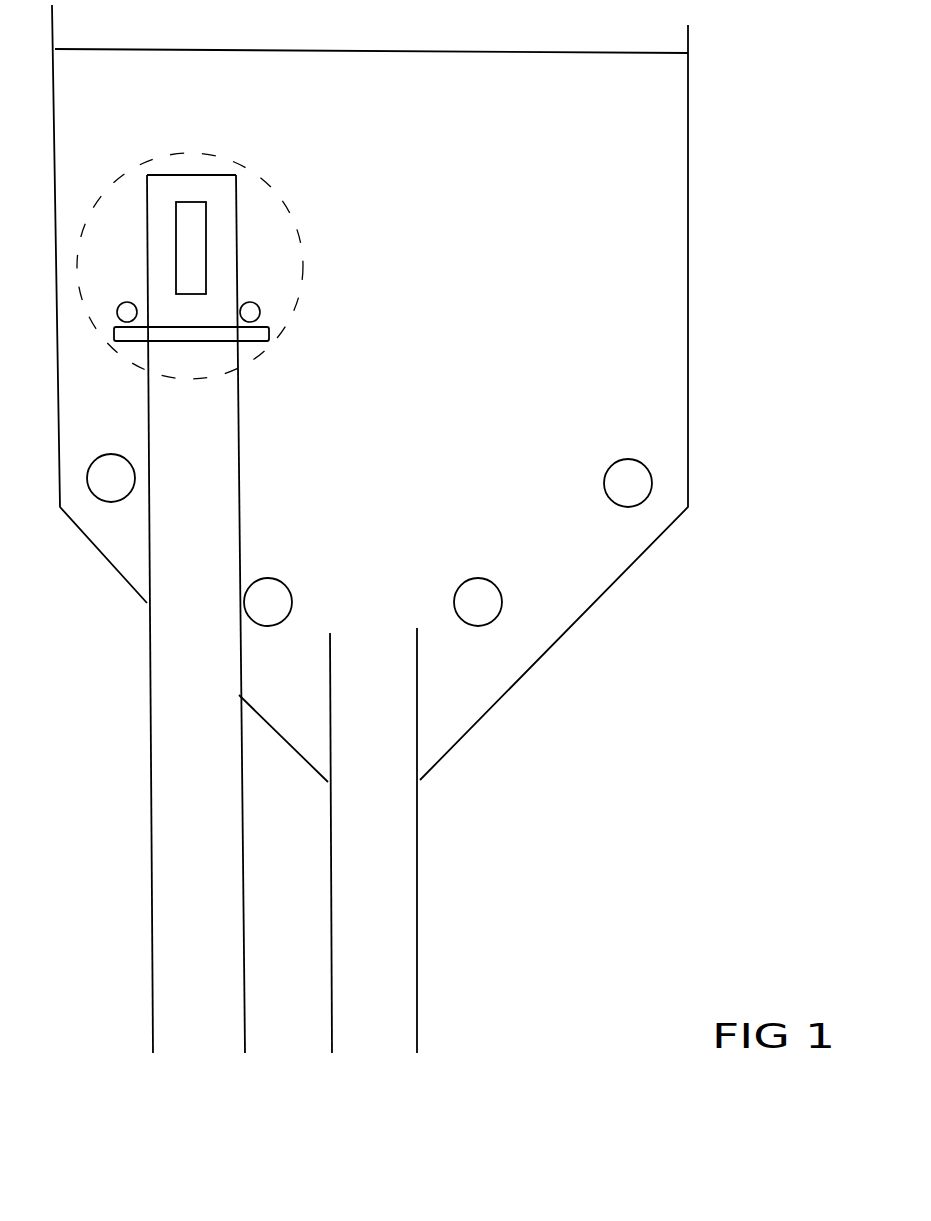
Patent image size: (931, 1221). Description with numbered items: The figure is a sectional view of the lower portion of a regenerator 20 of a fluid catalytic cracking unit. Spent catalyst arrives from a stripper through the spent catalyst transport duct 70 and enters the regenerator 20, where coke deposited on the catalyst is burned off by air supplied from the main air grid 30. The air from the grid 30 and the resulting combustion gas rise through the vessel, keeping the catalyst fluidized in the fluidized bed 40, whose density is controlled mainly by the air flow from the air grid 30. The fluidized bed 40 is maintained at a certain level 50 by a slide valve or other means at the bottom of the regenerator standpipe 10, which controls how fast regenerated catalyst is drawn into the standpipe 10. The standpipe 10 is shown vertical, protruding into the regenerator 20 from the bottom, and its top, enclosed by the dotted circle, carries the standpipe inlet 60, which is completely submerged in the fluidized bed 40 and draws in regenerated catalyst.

The regenerator standpipe 10 is at (212, 832).
The regenerator 20 is at (688, 298).
The main air grid 30 is at (646, 467).
The fluidized bed 40 is at (405, 265).
The level 50 is at (482, 53).
The standpipe inlet 60 is at (290, 276).
The spent catalyst transport duct 70 is at (388, 832).